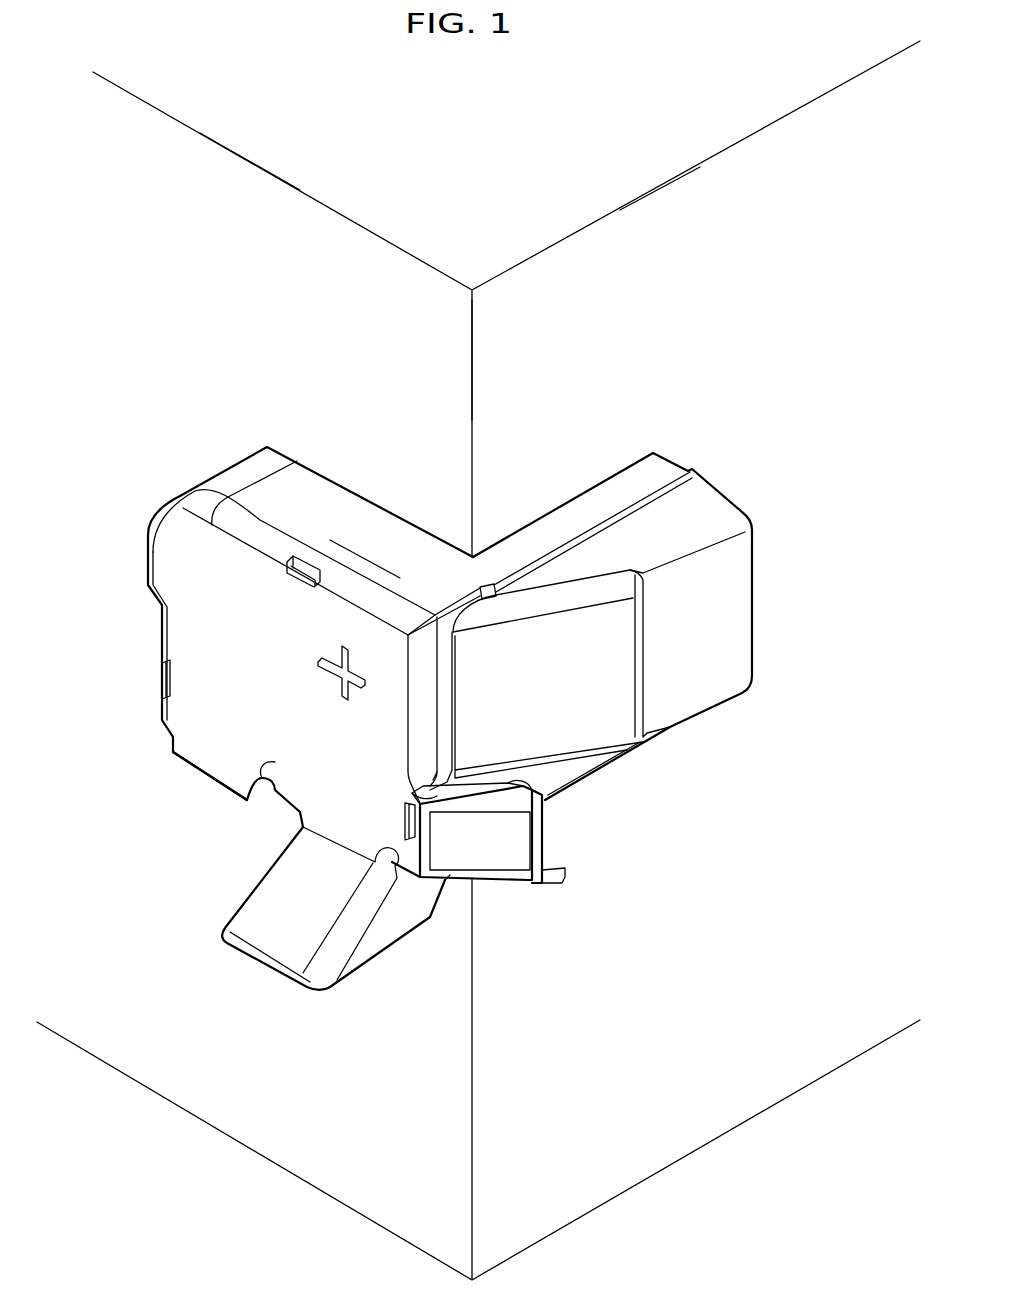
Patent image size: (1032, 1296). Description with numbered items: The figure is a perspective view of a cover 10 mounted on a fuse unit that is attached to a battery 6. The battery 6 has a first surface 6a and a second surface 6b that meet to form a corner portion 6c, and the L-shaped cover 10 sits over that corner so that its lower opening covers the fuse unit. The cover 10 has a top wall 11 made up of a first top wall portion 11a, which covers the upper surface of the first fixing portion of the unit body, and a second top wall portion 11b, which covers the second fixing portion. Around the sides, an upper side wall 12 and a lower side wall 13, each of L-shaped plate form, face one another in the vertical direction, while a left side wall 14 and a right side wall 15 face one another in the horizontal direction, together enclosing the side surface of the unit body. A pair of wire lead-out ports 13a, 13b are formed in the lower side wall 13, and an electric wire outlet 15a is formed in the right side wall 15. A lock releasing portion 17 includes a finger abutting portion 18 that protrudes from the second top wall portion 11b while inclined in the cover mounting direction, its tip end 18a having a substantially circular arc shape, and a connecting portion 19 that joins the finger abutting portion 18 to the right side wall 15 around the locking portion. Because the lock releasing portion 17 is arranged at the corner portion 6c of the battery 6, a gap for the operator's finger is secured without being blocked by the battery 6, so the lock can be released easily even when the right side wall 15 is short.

The battery 6 is at (724, 1151).
The first surface 6a is at (606, 262).
The second surface 6b is at (348, 262).
The corner portion 6c is at (472, 370).
The cover 10 is at (462, 742).
The top wall 11 is at (281, 649).
The first top wall portion 11a is at (621, 626).
The second top wall portion 11b is at (195, 708).
The upper side wall 12 is at (428, 552).
The lower side wall 13 is at (290, 800).
The wire lead-out port 13a is at (263, 972).
The wire lead-out port 13b is at (215, 787).
The left side wall 14 is at (162, 652).
The right side wall 15 is at (447, 733).
The electric wire outlet 15a is at (752, 575).
The lock releasing portion 17 is at (572, 894).
The finger abutting portion 18 is at (514, 877).
The tip end 18a is at (546, 830).
The connecting portion 19 is at (519, 798).